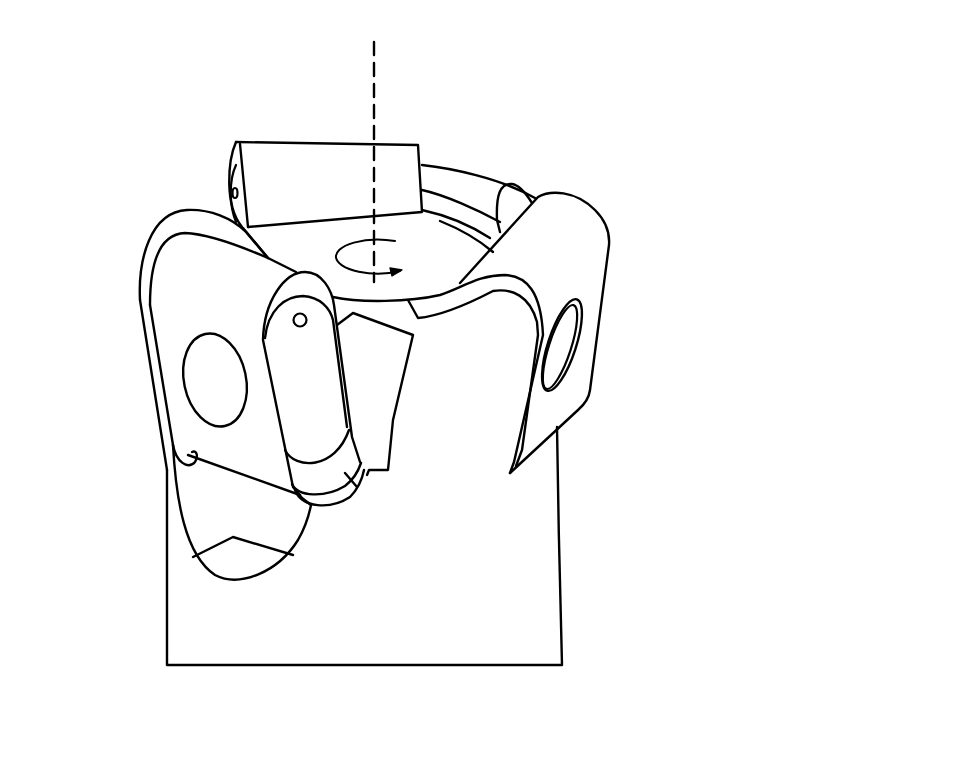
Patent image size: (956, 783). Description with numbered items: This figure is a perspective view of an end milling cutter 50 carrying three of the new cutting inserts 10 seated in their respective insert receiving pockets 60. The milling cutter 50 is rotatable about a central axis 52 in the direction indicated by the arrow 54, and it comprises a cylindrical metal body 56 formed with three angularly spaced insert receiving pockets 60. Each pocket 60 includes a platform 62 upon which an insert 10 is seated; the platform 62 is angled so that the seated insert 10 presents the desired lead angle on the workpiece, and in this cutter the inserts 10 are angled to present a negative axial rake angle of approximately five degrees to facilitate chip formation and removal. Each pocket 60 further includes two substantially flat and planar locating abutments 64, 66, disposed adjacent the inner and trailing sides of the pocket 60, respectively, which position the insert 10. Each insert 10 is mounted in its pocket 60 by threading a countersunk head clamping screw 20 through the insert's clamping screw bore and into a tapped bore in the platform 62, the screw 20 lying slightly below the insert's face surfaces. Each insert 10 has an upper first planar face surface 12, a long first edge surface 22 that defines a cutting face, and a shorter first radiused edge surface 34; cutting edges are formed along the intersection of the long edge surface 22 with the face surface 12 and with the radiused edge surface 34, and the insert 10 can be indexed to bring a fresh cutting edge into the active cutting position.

The cutting insert 10 is at (252, 130).
The first planar face surface 12 is at (401, 374).
The countersunk head screw 20 is at (215, 398).
The first edge surface 22 is at (325, 425).
The first radiused edge surface 34 is at (201, 266).
The end milling cutter 50 is at (718, 453).
The central axis 52 is at (375, 77).
The arrow 54 is at (348, 250).
The cylindrical metal body 56 is at (517, 576).
The insert receiving pocket 60 is at (328, 557).
The platform 62 is at (392, 339).
The locating abutment 64 is at (330, 503).
The locating abutment 66 is at (150, 265).